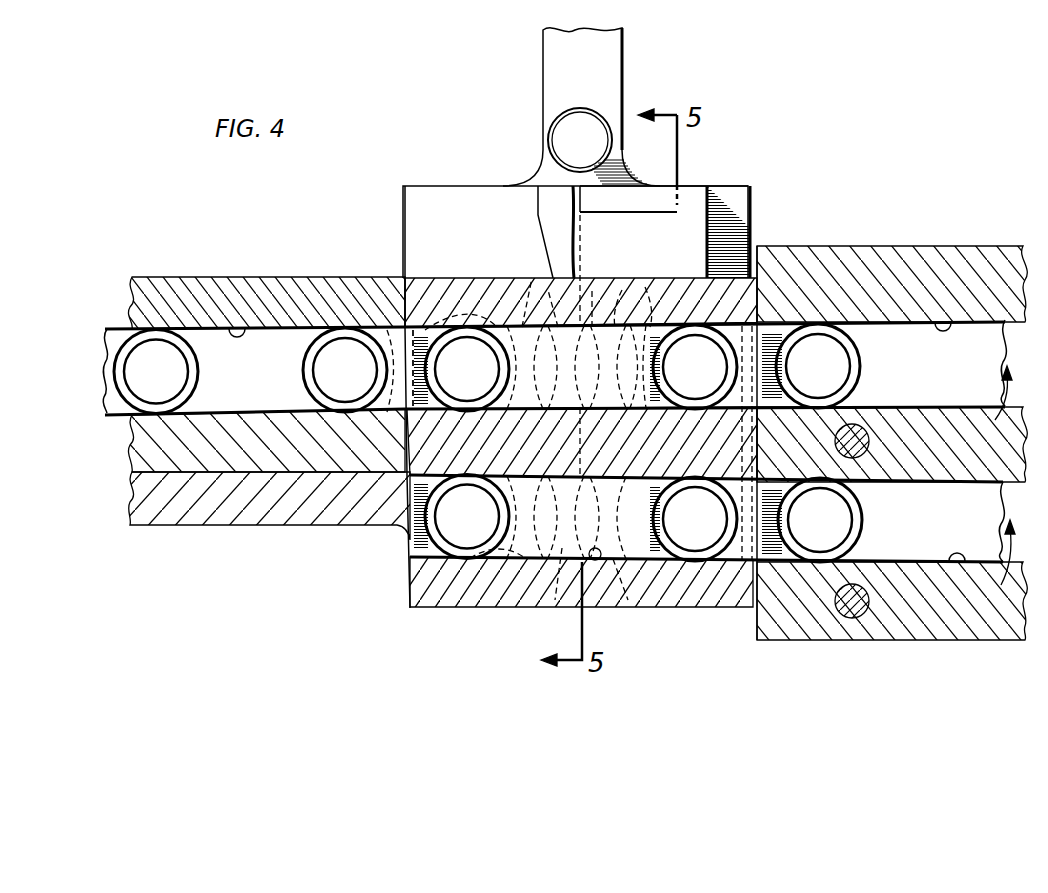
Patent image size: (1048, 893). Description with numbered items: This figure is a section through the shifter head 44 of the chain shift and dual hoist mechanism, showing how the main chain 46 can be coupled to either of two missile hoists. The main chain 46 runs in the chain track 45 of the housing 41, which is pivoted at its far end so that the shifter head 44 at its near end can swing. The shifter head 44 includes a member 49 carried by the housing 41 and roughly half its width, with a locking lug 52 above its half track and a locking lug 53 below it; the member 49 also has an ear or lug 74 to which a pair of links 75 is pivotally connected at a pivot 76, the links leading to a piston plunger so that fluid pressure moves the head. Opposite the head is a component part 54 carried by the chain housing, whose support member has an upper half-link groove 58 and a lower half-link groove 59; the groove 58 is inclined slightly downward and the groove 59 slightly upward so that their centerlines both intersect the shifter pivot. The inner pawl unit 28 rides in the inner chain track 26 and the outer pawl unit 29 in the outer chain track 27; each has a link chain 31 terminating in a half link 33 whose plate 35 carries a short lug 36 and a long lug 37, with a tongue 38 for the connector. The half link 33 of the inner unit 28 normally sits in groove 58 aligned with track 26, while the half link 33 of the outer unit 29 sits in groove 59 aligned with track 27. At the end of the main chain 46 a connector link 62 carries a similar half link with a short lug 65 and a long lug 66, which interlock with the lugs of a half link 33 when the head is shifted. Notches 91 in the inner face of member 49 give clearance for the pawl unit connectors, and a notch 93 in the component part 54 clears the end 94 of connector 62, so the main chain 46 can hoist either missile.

The inner chain track 26 is at (936, 320).
The outer chain track 27 is at (945, 565).
The inner hoist or pawl unit 28 is at (990, 401).
The outer hoist or pawl unit 29 is at (995, 563).
The link chain structure 31 is at (923, 379).
The half link 33 is at (497, 327).
The plate of half link 35 is at (571, 379).
The short lug 36 is at (522, 327).
The long lug 37 is at (594, 327).
The tongue 38 is at (428, 328).
The shift mechanism housing 41 is at (293, 281).
The shifter head 44 is at (717, 176).
The chain track 45 is at (237, 328).
The main chain 46 is at (254, 385).
The shifter head member 49 is at (688, 192).
The upper locking lug 52 is at (542, 208).
The lower locking lug 53 is at (562, 548).
The shifter head component part 54 is at (691, 610).
The upper half-link groove 58 is at (622, 290).
The lower half-link groove 59 is at (593, 561).
The connector link 62 is at (385, 340).
The short lug 65 is at (645, 287).
The long lug 66 is at (558, 327).
The ear or lug 74 is at (540, 173).
The links 75 is at (610, 53).
The pivot connection 76 is at (597, 125).
The notches 91 is at (737, 221).
The notch 93 is at (437, 441).
The connector end 94 is at (413, 328).